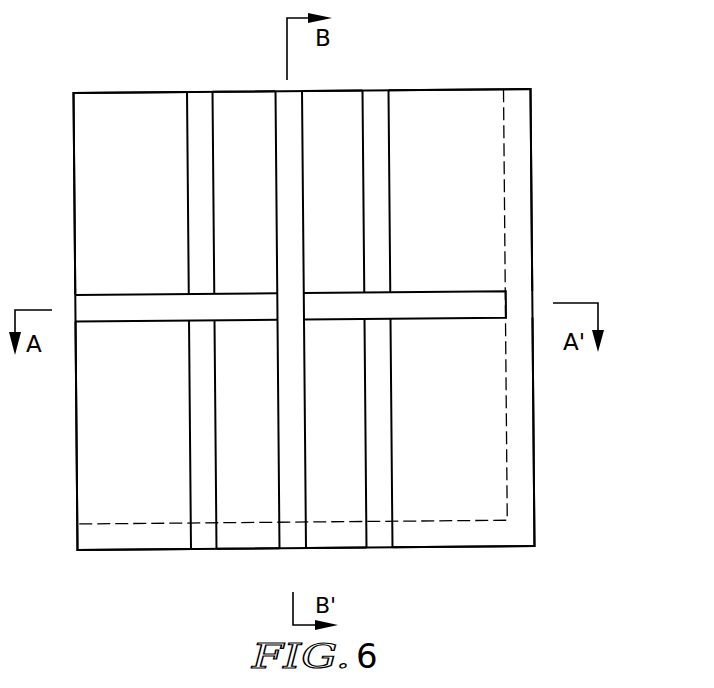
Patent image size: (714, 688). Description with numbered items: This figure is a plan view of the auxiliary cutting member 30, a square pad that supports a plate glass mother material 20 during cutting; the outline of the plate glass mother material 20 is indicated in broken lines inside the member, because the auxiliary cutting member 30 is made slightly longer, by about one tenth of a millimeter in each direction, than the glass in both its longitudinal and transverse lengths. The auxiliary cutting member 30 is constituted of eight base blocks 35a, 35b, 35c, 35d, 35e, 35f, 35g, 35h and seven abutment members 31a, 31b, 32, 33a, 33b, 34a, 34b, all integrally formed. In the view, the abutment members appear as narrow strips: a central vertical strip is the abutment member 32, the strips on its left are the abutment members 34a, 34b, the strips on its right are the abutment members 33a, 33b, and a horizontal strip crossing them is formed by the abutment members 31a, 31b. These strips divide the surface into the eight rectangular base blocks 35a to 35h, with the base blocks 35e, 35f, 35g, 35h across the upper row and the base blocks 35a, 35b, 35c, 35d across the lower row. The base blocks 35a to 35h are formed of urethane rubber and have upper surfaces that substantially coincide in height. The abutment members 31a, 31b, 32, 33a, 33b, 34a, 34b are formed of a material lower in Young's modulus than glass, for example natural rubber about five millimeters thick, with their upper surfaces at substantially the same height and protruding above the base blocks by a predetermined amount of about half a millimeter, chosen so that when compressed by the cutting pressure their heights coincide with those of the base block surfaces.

The plate glass mother material 20 is at (503, 160).
The auxiliary cutting member 30 is at (353, 46).
The abutment member 31a is at (88, 313).
The abutment member 31b is at (495, 302).
The abutment member 32 is at (292, 505).
The abutment member 33a is at (377, 97).
The abutment member 33b is at (382, 533).
The abutment member 34a is at (207, 69).
The abutment member 34b is at (203, 505).
The base block 35a is at (107, 502).
The base block 35b is at (240, 535).
The base block 35c is at (338, 533).
The base block 35d is at (460, 502).
The base block 35e is at (141, 69).
The base block 35f is at (232, 97).
The base block 35g is at (348, 97).
The base block 35h is at (437, 96).